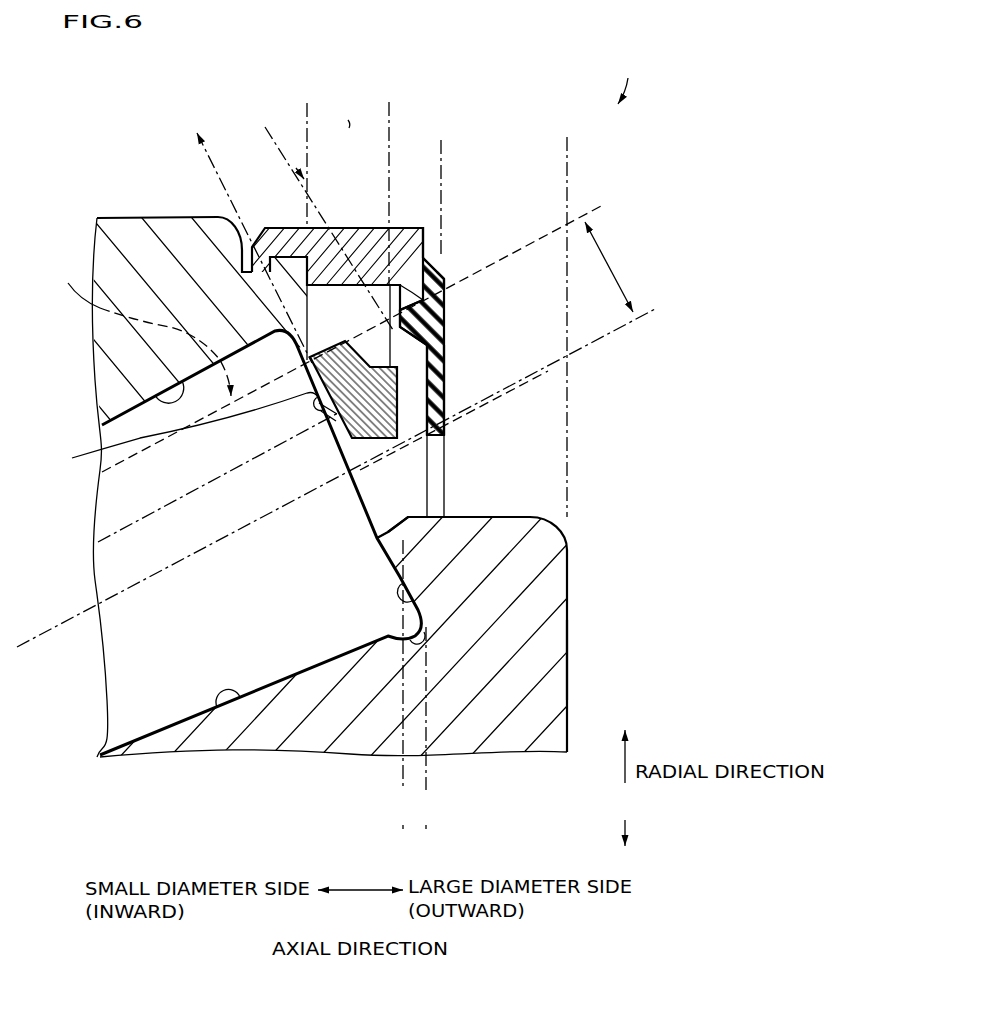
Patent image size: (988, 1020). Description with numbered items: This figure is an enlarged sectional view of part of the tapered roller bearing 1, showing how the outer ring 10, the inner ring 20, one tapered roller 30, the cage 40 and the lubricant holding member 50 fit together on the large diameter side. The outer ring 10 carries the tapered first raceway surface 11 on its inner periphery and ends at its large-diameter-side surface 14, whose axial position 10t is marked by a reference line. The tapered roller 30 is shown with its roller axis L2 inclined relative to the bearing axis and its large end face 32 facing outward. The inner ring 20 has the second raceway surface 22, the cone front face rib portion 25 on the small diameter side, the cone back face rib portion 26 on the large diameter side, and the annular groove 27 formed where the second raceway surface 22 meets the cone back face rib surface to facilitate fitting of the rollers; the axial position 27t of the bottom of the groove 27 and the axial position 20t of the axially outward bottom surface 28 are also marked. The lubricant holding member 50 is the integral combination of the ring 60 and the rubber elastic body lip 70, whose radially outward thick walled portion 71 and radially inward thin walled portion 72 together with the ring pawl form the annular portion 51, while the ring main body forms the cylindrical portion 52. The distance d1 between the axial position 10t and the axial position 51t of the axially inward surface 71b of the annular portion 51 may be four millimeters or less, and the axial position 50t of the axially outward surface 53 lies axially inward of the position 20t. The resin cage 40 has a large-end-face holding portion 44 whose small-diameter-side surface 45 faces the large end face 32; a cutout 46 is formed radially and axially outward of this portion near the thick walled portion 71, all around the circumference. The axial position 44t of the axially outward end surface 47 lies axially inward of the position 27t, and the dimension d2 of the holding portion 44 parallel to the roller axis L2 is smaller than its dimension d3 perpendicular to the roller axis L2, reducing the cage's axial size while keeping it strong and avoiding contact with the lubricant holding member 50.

The tapered roller bearing 1 is at (628, 79).
The outer ring 10 is at (162, 227).
The axial position of large-diameter-side surface of outer ring 10t is at (305, 108).
The first raceway surface 11 is at (153, 393).
The large-diameter-side surface of outer ring 14 is at (302, 257).
The inner ring 20 is at (567, 677).
The axial position of axially outward bottom surface of inner ring 20t is at (569, 150).
The second raceway surface 22 is at (217, 704).
The cone front face rib portion 25 is at (395, 590).
The cone back face rib portion 26 is at (412, 528).
The annular groove 27 is at (420, 634).
The axial position of bottom surface of groove 27t is at (428, 780).
The axially outward bottom surface of inner ring 28 is at (568, 645).
The tapered roller 30 is at (167, 685).
The large end face 32 is at (360, 508).
The cage 40 is at (138, 329).
The large-end-face holding portion 44 is at (322, 341).
The axial position of axially outward end surface of large-end-face holding portion 44t is at (401, 772).
The small-diameter-side surface of large-end-face holding portion 45 is at (318, 413).
The cutout 46 is at (372, 352).
The axially outward end surface of large-end-face holding portion 47 is at (398, 385).
The lubricant holding member 50 is at (416, 224).
The axial position of axially outward surface of lubricant holding member 50t is at (443, 148).
The annular portion 51 is at (444, 312).
The axial position of axially inward surface of annular portion 51t is at (392, 110).
The cylindrical portion 52 is at (364, 227).
The axially outward surface of lubricant holding member 53 is at (437, 296).
The ring 60 is at (343, 224).
The elastic body lip 70 is at (450, 338).
The thick walled portion 71 is at (445, 278).
The axially inward surface of thick walled portion 71b is at (440, 272).
The thin walled portion 72 is at (447, 357).
The distance between axial positions 10t and 51t d1 is at (349, 111).
The dimension of large-end-face holding portion parallel to roller axis d2 is at (295, 240).
The dimension of large-end-face holding portion perpendicular to roller axis d3 is at (612, 266).
The roller axis L2 is at (63, 618).